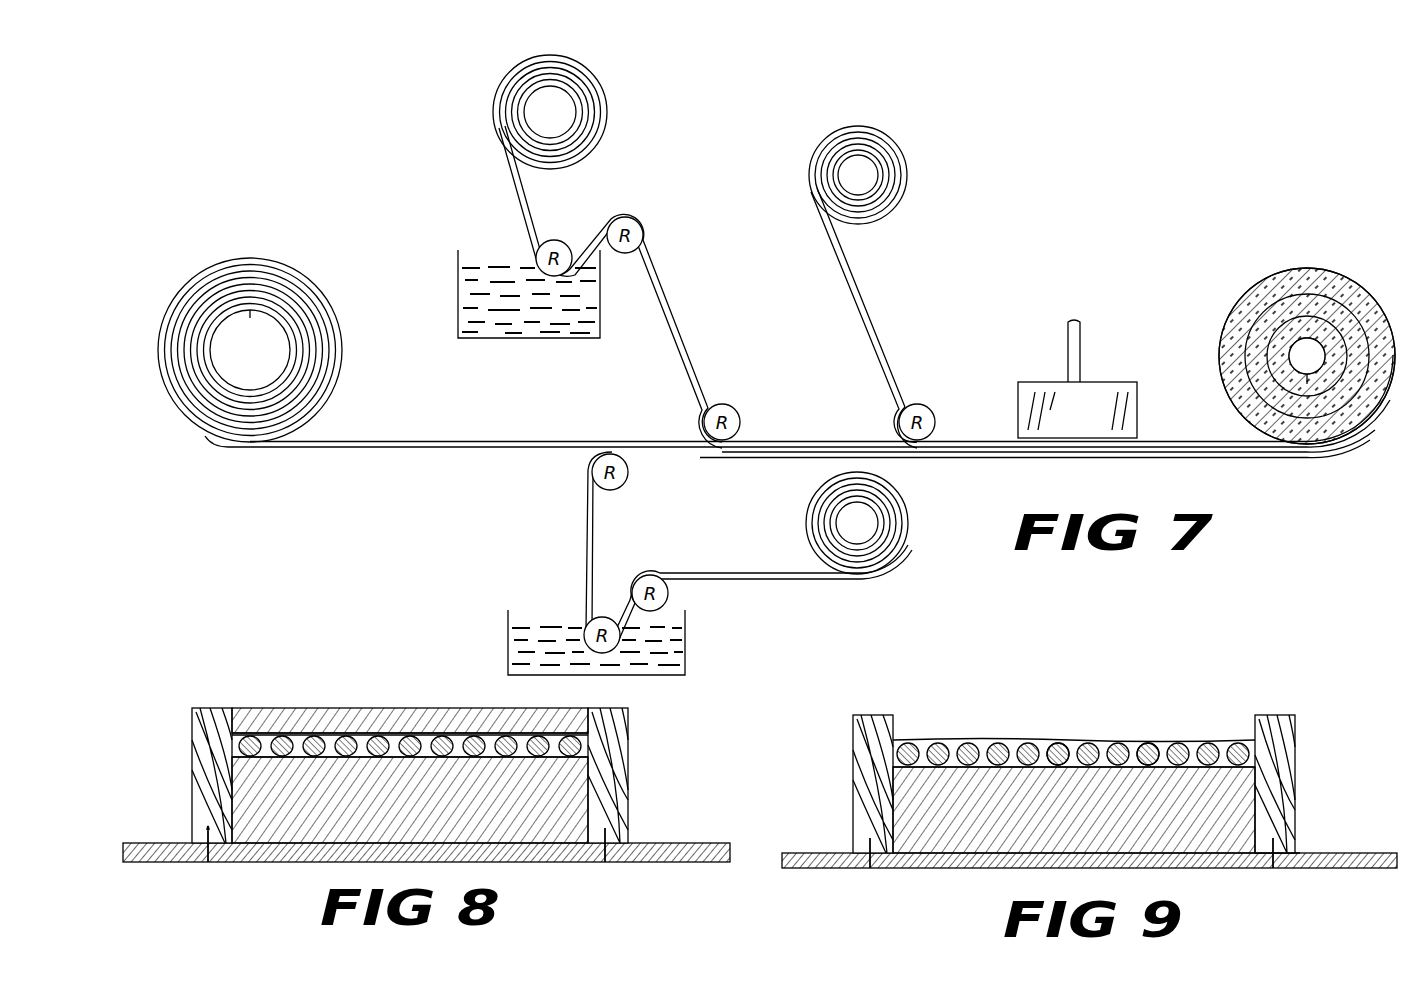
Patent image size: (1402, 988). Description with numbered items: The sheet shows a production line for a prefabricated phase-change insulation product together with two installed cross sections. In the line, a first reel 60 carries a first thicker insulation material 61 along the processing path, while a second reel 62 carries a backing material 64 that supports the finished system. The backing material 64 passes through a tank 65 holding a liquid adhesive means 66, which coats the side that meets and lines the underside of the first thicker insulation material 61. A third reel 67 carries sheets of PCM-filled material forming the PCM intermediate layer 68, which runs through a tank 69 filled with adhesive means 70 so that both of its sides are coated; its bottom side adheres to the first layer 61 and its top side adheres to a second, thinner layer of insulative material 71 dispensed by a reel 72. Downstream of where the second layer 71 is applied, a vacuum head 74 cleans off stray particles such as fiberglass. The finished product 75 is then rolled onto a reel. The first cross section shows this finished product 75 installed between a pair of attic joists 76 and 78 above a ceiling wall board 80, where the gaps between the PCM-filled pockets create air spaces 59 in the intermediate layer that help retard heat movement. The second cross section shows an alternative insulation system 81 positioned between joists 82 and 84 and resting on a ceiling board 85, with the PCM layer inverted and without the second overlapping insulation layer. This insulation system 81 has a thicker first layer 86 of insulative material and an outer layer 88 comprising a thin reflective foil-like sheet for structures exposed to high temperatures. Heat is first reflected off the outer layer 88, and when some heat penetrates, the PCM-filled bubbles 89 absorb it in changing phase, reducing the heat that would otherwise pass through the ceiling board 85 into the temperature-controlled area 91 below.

In FIG. 8, the air spaces 59 is at (598, 740).
In FIG. 7, the first reel 60 is at (238, 250).
In FIG. 7, the first thicker insulation material 61 is at (404, 441).
In FIG. 7, the second reel 62 is at (903, 484).
In FIG. 7, the backing material 64 is at (733, 573).
In FIG. 7, the tank 65 is at (500, 657).
In FIG. 7, the liquid adhesive means 66 is at (560, 626).
In FIG. 7, the third reel 67 is at (596, 66).
In FIG. 7, the PCM intermediate layer 68 is at (528, 194).
In FIG. 7, the tank 69 is at (452, 302).
In FIG. 7, the adhesive means 70 is at (500, 268).
In FIG. 7, the second layer of insulative material 71 is at (860, 280).
In FIG. 7, the reel 72 is at (846, 118).
In FIG. 7, the vacuum head 74 is at (1092, 421).
In FIG. 7, the finished product 75 is at (1279, 258).
In FIG. 8, the finished product 75 is at (304, 672).
In FIG. 8, the joist 76 is at (198, 808).
In FIG. 8, the joist 78 is at (630, 776).
In FIG. 8, the ceiling wall board 80 is at (258, 862).
In FIG. 9, the insulation system 81 is at (1010, 734).
In FIG. 9, the joist 82 is at (854, 800).
In FIG. 9, the joist 84 is at (1296, 776).
In FIG. 9, the ceiling board 85 is at (930, 868).
In FIG. 9, the thicker first layer 86 is at (1086, 831).
In FIG. 9, the outer layer 88 is at (1158, 748).
In FIG. 9, the PCM-filled bubbles 89 is at (1068, 748).
In FIG. 9, the temperature-controlled area 91 is at (1302, 914).